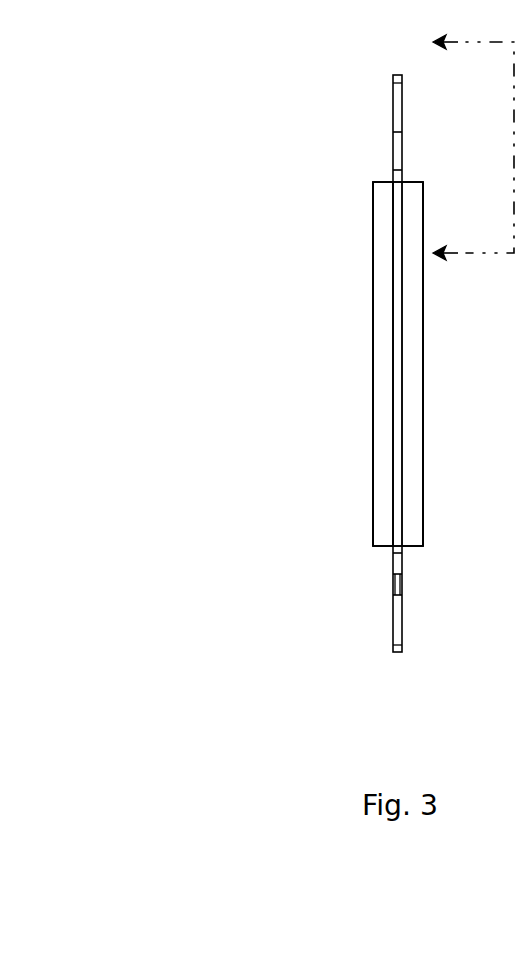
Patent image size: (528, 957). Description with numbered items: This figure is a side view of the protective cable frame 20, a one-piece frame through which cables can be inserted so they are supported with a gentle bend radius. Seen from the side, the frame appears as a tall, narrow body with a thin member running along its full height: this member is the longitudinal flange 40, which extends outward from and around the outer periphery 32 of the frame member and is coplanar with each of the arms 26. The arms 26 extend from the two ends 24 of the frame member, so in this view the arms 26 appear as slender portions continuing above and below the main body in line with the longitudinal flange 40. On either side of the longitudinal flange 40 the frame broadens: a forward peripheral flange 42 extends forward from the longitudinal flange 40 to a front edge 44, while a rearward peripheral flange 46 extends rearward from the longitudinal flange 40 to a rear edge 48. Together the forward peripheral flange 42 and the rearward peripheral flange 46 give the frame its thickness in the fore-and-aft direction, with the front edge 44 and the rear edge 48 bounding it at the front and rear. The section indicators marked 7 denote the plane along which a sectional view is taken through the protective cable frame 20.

The stent delivery assembly 20 is at (292, 153).
The housing body 24 is at (383, 181).
The rod segment markers 26 is at (398, 148).
The inner wall 32 is at (383, 428).
The rod 40 is at (400, 452).
The right chamber 42 is at (413, 311).
The right wall 44 is at (422, 364).
The left chamber 46 is at (382, 282).
The left wall 48 is at (373, 364).
The section line 7- 7 is at (473, 148).